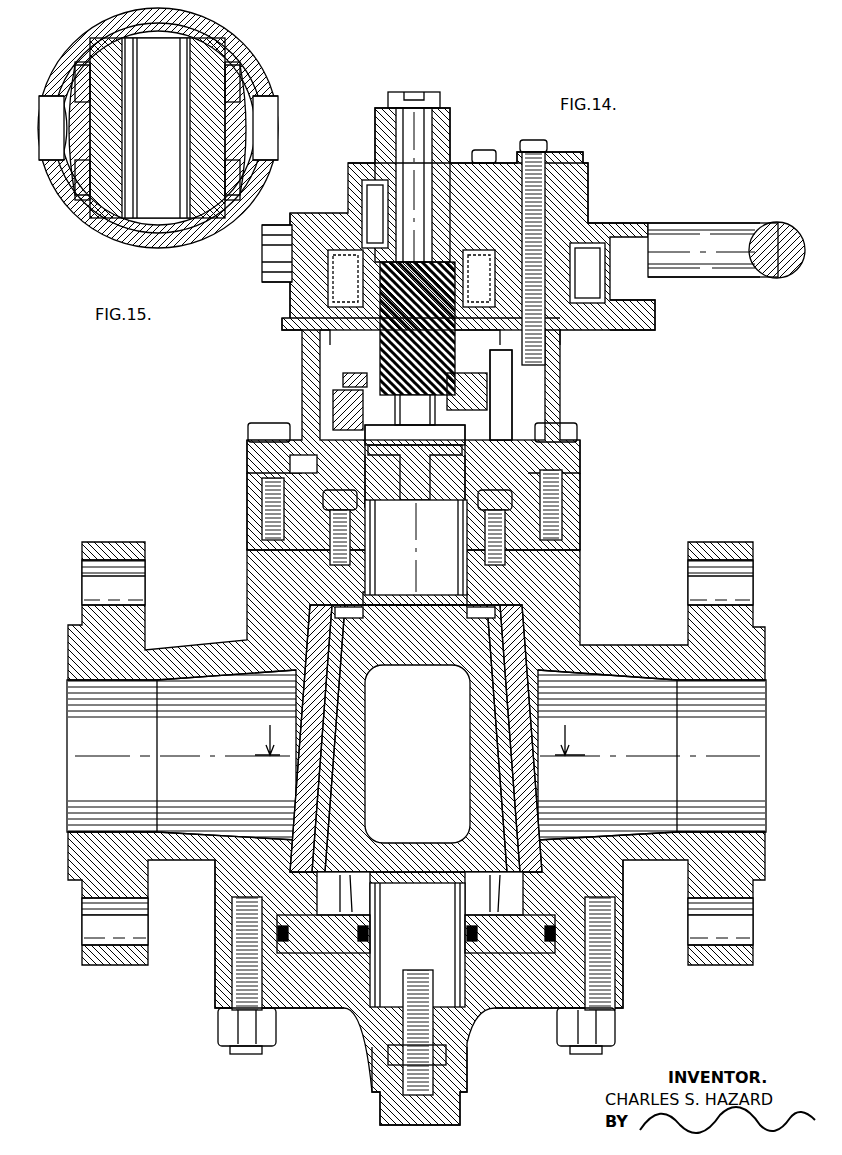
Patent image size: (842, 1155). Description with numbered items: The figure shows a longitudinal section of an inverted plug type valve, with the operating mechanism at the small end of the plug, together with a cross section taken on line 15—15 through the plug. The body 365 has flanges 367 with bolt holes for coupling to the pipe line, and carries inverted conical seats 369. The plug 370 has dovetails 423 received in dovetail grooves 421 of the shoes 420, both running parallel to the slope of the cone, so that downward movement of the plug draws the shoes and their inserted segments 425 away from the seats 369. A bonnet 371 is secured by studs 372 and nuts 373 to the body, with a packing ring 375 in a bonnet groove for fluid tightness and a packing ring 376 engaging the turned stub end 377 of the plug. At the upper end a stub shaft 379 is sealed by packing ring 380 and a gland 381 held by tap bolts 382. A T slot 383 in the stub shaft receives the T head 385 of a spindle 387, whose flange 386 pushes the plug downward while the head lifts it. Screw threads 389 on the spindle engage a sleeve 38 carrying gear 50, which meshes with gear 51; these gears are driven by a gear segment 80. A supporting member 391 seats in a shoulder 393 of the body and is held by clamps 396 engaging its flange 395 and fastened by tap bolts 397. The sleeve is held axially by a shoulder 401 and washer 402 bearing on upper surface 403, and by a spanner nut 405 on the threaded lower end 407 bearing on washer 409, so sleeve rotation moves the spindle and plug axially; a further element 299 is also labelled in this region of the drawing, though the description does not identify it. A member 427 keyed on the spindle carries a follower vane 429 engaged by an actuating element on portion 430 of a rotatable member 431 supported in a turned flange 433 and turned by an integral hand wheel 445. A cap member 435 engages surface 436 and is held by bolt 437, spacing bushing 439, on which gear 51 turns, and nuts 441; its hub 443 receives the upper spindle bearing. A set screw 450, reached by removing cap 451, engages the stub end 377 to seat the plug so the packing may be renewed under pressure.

In FIG. 14, the section line 15— 15 is at (418, 740).
In FIG. 14, the sleeve 38 is at (485, 285).
In FIG. 14, the gear 50 is at (352, 285).
In FIG. 14, the gear 51 is at (573, 340).
In FIG. 14, the gear segment 80 is at (292, 290).
In FIG. 14, the spacer 299 is at (498, 380).
In FIG. 15, the body 365 is at (250, 70).
In FIG. 14, the body 365 is at (580, 575).
In FIG. 14, the flanges 367 is at (712, 542).
In FIG. 15, the seat 369 is at (255, 84).
In FIG. 14, the seat 369 is at (310, 618).
In FIG. 14, the plug 370 is at (420, 893).
In FIG. 14, the bonnet 371 is at (312, 1008).
In FIG. 14, the studs 372 is at (590, 1054).
In FIG. 14, the nuts 373 is at (618, 1025).
In FIG. 14, the packing ring 375 is at (290, 945).
In FIG. 14, the packing ring 376 is at (370, 935).
In FIG. 14, the stub end 377 is at (424, 912).
In FIG. 14, the stub shaft 379 is at (428, 572).
In FIG. 14, the packing ring 380 is at (338, 572).
In FIG. 14, the gland 381 is at (372, 533).
In FIG. 14, the tap bolts 382 is at (340, 490).
In FIG. 14, the T slot 383 is at (436, 487).
In FIG. 14, the T head 385 is at (440, 472).
In FIG. 14, the flange 386 is at (365, 440).
In FIG. 14, the spindle 387 is at (436, 126).
In FIG. 14, the screw threads 389 is at (362, 238).
In FIG. 14, the supporting member 391 is at (560, 395).
In FIG. 14, the shoulder 393 is at (262, 500).
In FIG. 14, the flange 395 is at (247, 478).
In FIG. 14, the clamps 396 is at (247, 462).
In FIG. 14, the tap bolts 397 is at (272, 423).
In FIG. 14, the shoulder 401 is at (355, 318).
In FIG. 14, the washer 402 is at (283, 324).
In FIG. 14, the upper surface 403 is at (470, 318).
In FIG. 14, the spanner nut 405 is at (475, 410).
In FIG. 14, the threaded lower end 407 is at (362, 418).
In FIG. 14, the washer 409 is at (355, 378).
In FIG. 15, the shoes 420 is at (95, 95).
In FIG. 14, the shoes 420 is at (345, 717).
In FIG. 15, the dovetail grooves 421 is at (62, 100).
In FIG. 15, the dovetails 423 is at (225, 128).
In FIG. 15, the inserted segments 425 is at (80, 130).
In FIG. 14, the inserted segments 425 is at (298, 798).
In FIG. 14, the member 427 is at (452, 190).
In FIG. 14, the follower vane 429 is at (368, 185).
In FIG. 14, the portion 430 is at (590, 205).
In FIG. 14, the rotatable member 431 is at (650, 225).
In FIG. 14, the turned flange 433 is at (656, 300).
In FIG. 14, the cap member 435 is at (588, 158).
In FIG. 14, the surface 436 is at (592, 176).
In FIG. 14, the bolt 437 is at (552, 168).
In FIG. 14, the spacing bushing 439 is at (598, 262).
In FIG. 14, the nuts 441 is at (541, 150).
In FIG. 14, the hub 443 is at (432, 110).
In FIG. 14, the hand wheel 445 is at (772, 280).
In FIG. 14, the set screw 450 is at (446, 1055).
In FIG. 14, the cap 451 is at (380, 1117).